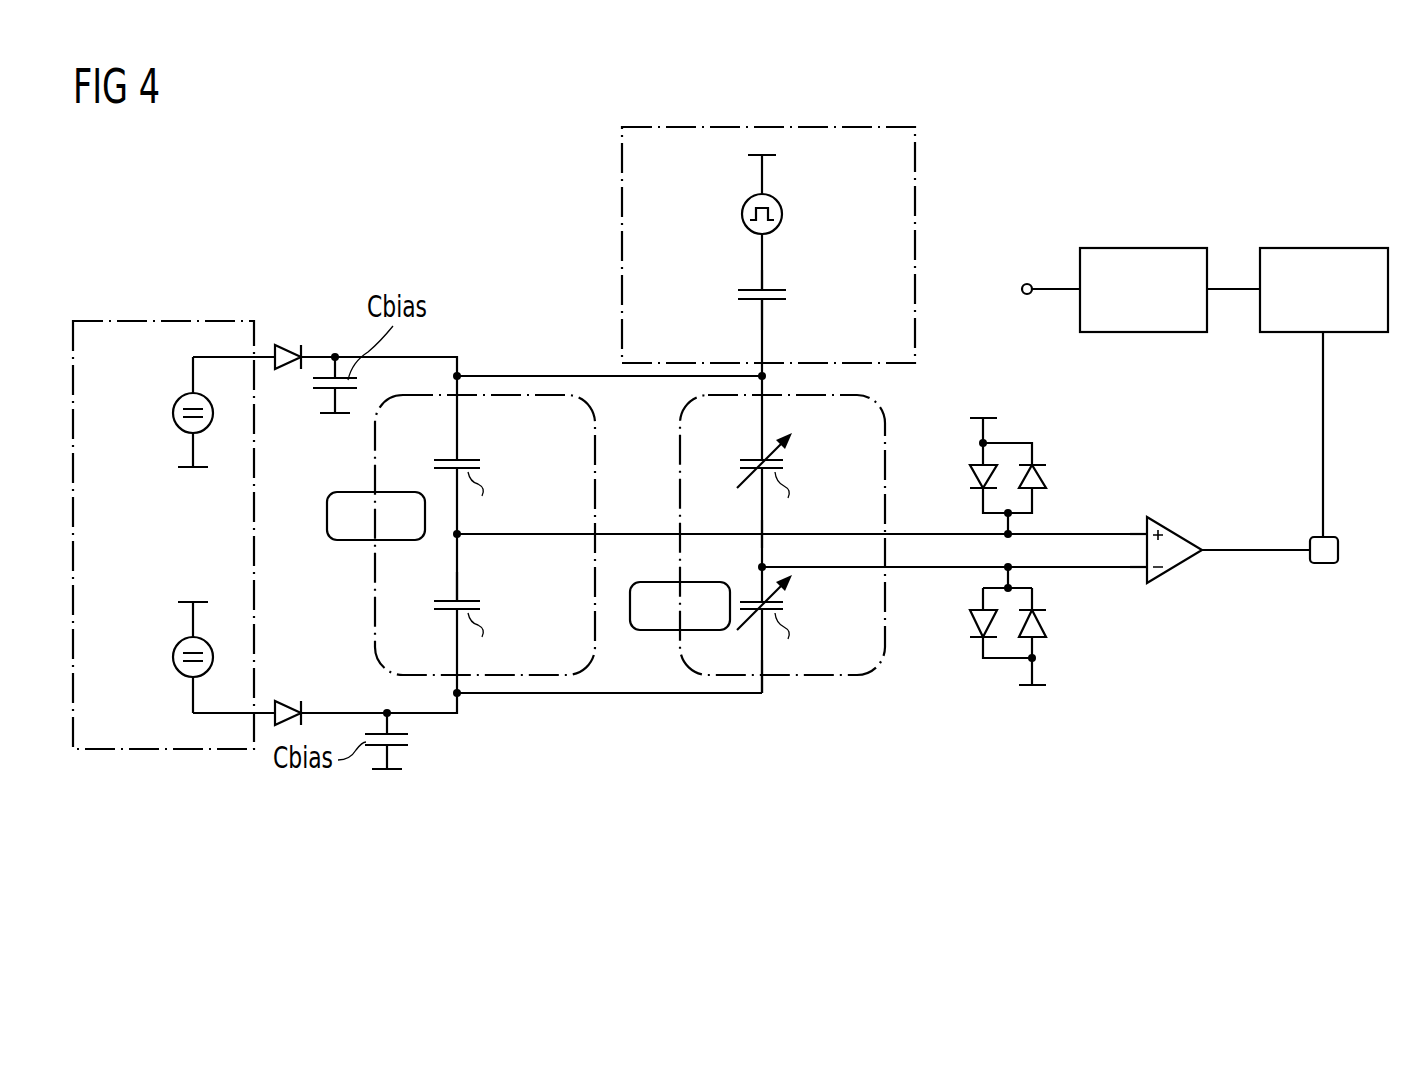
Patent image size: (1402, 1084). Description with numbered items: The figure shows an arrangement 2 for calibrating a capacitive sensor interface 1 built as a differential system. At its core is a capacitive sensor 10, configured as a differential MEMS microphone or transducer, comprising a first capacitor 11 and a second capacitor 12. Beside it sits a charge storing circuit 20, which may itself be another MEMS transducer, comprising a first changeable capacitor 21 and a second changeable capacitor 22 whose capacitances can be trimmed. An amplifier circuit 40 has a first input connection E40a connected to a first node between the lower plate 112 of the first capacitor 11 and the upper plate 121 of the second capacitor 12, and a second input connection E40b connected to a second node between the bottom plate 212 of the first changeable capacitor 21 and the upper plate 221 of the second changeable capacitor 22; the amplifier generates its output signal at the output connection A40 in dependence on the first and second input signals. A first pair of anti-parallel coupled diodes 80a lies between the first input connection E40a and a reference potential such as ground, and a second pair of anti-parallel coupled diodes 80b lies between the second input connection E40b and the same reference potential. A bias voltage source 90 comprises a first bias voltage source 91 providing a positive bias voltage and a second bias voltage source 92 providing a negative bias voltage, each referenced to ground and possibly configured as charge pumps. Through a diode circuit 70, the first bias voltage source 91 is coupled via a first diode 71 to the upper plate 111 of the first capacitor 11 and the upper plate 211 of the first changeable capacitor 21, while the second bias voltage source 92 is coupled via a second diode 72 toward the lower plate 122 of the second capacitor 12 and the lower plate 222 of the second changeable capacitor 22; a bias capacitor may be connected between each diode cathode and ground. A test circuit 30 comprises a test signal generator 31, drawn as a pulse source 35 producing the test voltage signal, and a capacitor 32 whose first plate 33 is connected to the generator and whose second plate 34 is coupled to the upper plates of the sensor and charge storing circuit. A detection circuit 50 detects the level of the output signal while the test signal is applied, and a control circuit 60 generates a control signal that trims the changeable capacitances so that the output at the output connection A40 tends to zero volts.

The capacitive sensor interface 1 is at (746, 728).
The arrangement 2 is at (1024, 230).
The capacitive sensor 10 is at (375, 600).
The first capacitor 11 is at (483, 462).
The second capacitor 12 is at (483, 603).
The upper plate 111 is at (452, 458).
The lower plate 112 is at (480, 518).
The upper plate 121 is at (452, 599).
The lower plate 122 is at (480, 668).
The charge storing circuit 20 is at (888, 468).
The first changeable capacitor 21 is at (786, 462).
The second changeable capacitor 22 is at (786, 604).
The upper plate 211 is at (757, 458).
The bottom plate 212 is at (787, 524).
The upper plate 221 is at (757, 600).
The lower plate 222 is at (787, 666).
The test circuit 30 is at (756, 126).
The test signal generator 31 is at (731, 213).
The pulse signal generator 35 is at (741, 215).
The capacitor 32 is at (786, 296).
The first plate 33 is at (757, 288).
The second plate 34 is at (775, 302).
The amplifier circuit 40 is at (1180, 524).
The first input connection E40a is at (1145, 530).
The second input connection E40b is at (1145, 575).
The output connection A40 is at (1322, 566).
The detection circuit 50 is at (1322, 248).
The control circuit 60 is at (1142, 248).
The diode circuit 70 is at (305, 507).
The first diode 71 is at (297, 346).
The second diode 72 is at (297, 701).
The first pair of anti-parallel coupled diodes 80a is at (1026, 418).
The second pair of anti-parallel coupled diodes 80b is at (994, 688).
The bias voltage source 90 is at (172, 322).
The first bias voltage source 91 is at (179, 398).
The second bias voltage source 92 is at (179, 656).